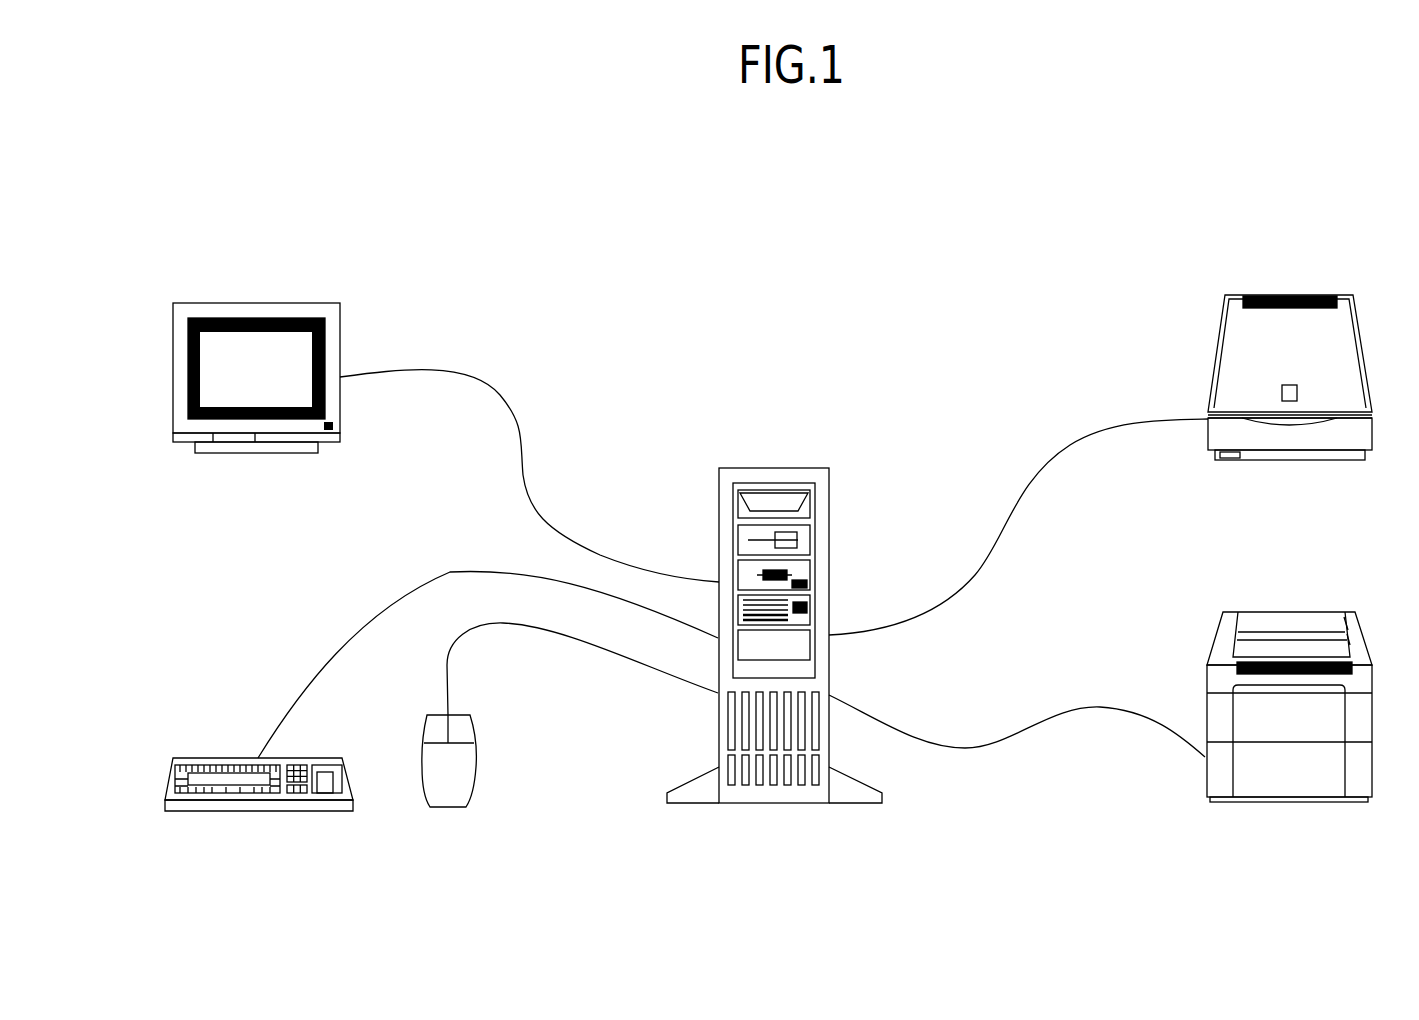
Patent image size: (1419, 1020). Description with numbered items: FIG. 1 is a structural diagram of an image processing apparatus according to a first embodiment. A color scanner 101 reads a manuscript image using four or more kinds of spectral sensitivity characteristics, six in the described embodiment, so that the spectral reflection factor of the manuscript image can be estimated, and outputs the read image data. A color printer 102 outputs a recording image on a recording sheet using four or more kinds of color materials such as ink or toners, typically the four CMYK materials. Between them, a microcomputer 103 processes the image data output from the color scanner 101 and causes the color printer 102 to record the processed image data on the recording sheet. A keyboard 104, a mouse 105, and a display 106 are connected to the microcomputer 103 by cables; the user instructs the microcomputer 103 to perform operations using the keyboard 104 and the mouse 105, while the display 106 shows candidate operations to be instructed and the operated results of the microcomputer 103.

The color scanner 101 is at (1295, 294).
The color printer 102 is at (1295, 610).
The microcomputer 103 is at (780, 467).
The keyboard 104 is at (222, 758).
The mouse 105 is at (477, 763).
The display 106 is at (253, 303).